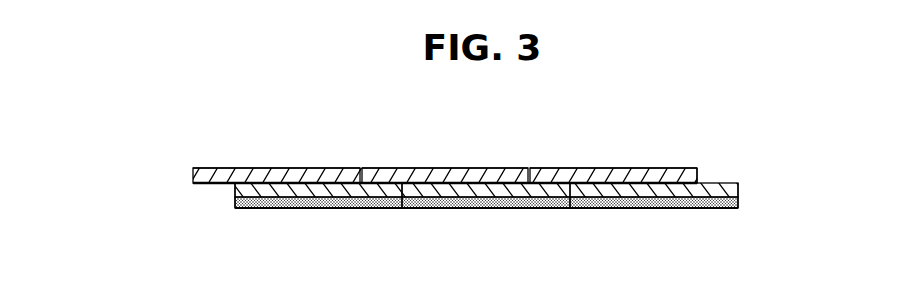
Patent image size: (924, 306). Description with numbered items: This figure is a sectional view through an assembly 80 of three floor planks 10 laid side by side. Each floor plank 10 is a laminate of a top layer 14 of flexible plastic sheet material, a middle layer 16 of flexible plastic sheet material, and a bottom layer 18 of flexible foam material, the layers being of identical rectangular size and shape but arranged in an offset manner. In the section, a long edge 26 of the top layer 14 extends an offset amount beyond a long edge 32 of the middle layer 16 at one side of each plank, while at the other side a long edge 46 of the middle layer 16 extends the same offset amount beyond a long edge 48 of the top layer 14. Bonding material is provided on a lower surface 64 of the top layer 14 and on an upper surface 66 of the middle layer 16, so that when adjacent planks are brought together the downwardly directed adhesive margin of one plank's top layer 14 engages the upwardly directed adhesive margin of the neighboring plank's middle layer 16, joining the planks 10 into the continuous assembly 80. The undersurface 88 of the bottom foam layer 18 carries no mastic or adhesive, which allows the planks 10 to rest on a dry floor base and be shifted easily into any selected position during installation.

The assembly 80 is at (746, 71).
The floor plank 10 is at (733, 140).
The top layer 14 is at (241, 165).
The long edge of the top layer 26 is at (193, 175).
The long edge of the top layer 48 is at (699, 176).
The lower surface of the top layer 64 is at (203, 184).
The upper surface of the middle layer 66 is at (729, 182).
The middle layer 16 is at (743, 186).
The long edge of the middle layer 46 is at (739, 194).
The bottom layer 18 is at (719, 210).
The long edge of the middle layer 32 is at (235, 198).
The undersurface of the bottom foam layer 88 is at (277, 210).